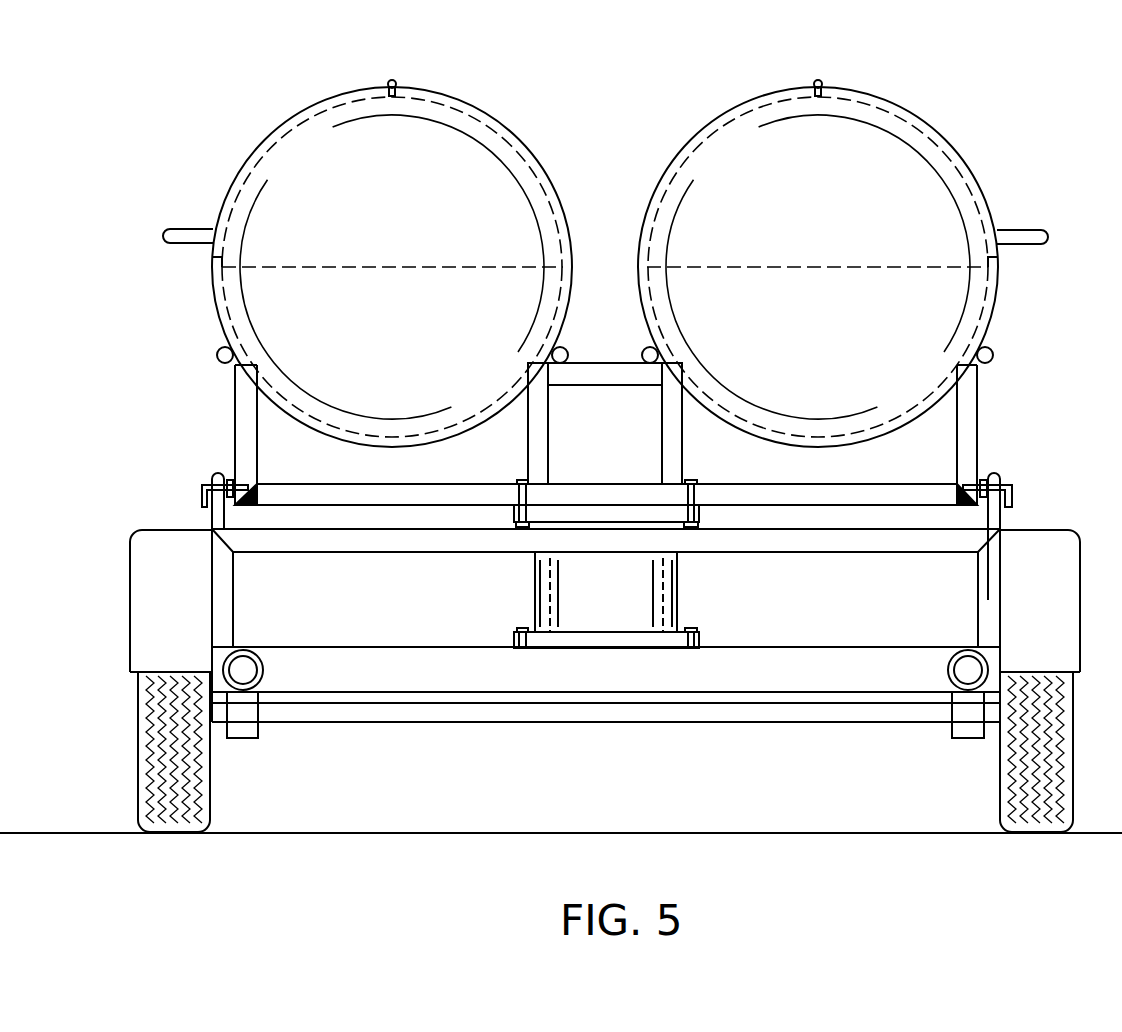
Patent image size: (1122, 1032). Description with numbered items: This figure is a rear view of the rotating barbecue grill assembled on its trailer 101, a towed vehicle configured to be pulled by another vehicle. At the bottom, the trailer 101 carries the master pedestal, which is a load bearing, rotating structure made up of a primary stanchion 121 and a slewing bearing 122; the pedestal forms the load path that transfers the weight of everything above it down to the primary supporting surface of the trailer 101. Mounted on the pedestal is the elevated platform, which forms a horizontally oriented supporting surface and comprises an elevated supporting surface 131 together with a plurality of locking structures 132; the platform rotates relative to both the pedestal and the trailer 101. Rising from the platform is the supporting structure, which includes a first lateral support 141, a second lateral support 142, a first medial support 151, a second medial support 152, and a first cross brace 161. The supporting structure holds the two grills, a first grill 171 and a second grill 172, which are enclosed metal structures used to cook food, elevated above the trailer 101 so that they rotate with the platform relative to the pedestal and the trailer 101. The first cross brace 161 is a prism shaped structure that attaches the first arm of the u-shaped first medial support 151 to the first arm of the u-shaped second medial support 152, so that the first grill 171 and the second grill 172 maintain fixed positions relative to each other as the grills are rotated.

The trailer 101 is at (863, 673).
The primary stanchion 121 is at (677, 605).
The slewing bearing 122 is at (663, 513).
The elevated supporting surface 131 is at (932, 498).
The locking structure 132 is at (200, 488).
The first lateral support 141 is at (257, 448).
The second lateral support 142 is at (953, 435).
The first medial support 151 is at (528, 438).
The second medial support 152 is at (662, 437).
The first cross brace 161 is at (592, 373).
The first grill 171 is at (458, 100).
The second grill 172 is at (860, 113).